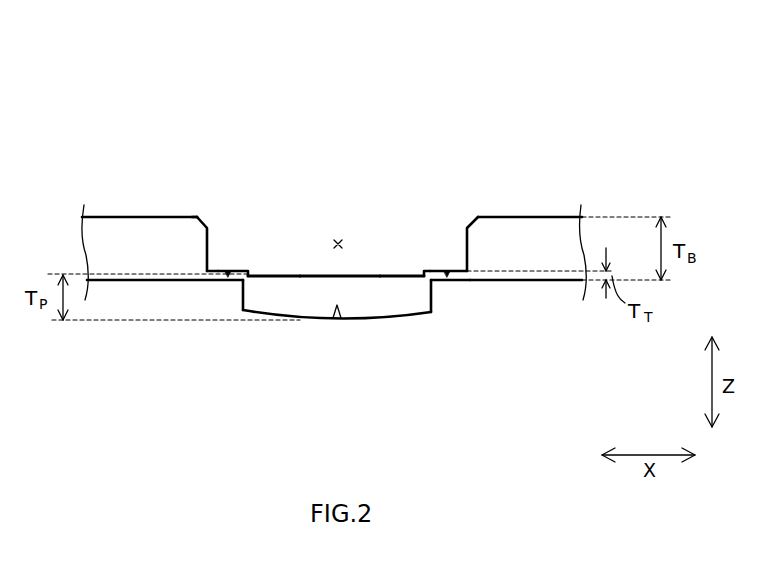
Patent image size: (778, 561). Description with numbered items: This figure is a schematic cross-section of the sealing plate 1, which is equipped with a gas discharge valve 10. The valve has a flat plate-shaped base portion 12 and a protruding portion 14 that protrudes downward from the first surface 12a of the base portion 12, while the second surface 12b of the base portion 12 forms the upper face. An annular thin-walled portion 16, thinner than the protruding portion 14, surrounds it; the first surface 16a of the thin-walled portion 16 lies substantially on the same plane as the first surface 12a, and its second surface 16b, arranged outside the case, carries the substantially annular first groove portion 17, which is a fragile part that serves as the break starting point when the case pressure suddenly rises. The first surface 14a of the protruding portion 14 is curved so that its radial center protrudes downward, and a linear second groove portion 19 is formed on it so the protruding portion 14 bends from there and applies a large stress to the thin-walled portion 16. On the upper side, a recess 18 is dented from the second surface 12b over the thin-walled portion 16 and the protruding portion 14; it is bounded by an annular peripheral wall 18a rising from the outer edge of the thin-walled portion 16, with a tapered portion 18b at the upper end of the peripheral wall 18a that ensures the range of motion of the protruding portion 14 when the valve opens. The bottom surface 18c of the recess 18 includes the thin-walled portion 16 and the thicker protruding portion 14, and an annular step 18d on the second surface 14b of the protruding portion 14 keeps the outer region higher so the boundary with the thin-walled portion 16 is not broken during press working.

The sealing plate 1 is at (71, 23).
The gas discharge valve 10 is at (263, 108).
The base portion 12 is at (105, 217).
The first surface of the base portion 12a is at (533, 281).
The second surface of the base portion 12b is at (143, 217).
The protruding portion 14 is at (410, 305).
The first surface of the protruding portion 14a is at (378, 320).
The second surface of the protruding portion 14b is at (355, 275).
The thin-walled portion 16 is at (438, 270).
The first surface of the thin-walled portion 16a is at (458, 281).
The second surface of the thin-walled portion 16b is at (240, 268).
The first groove portion 17 is at (447, 270).
The recess 18 is at (336, 240).
The peripheral wall 18a is at (208, 245).
The tapered portion 18b is at (197, 217).
The bottom surface of the recess 18c is at (283, 275).
The annular step 18d is at (425, 270).
The second groove portion 19 is at (336, 320).